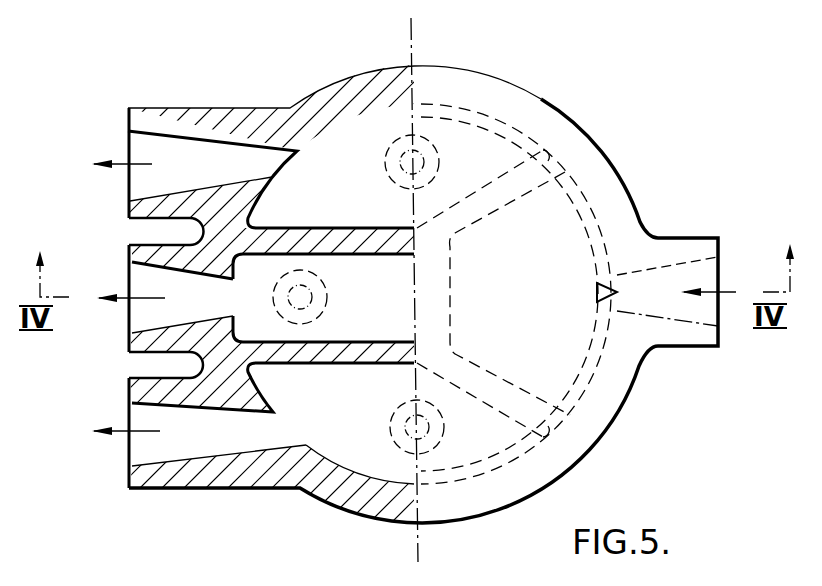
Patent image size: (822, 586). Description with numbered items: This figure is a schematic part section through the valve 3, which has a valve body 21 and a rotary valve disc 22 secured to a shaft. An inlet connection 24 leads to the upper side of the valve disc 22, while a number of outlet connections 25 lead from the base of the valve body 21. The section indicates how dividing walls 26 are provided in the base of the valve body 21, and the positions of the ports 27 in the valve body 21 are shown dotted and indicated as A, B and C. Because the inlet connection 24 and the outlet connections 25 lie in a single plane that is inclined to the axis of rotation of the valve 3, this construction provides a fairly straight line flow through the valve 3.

The valve 3 is at (320, 76).
The valve body 21 is at (438, 504).
The rotary valve disc 22 is at (497, 135).
The inlet connection 24 is at (710, 279).
The outlet connections 25 is at (148, 147).
The dividing walls 26 is at (363, 232).
The ports 27 is at (432, 141).